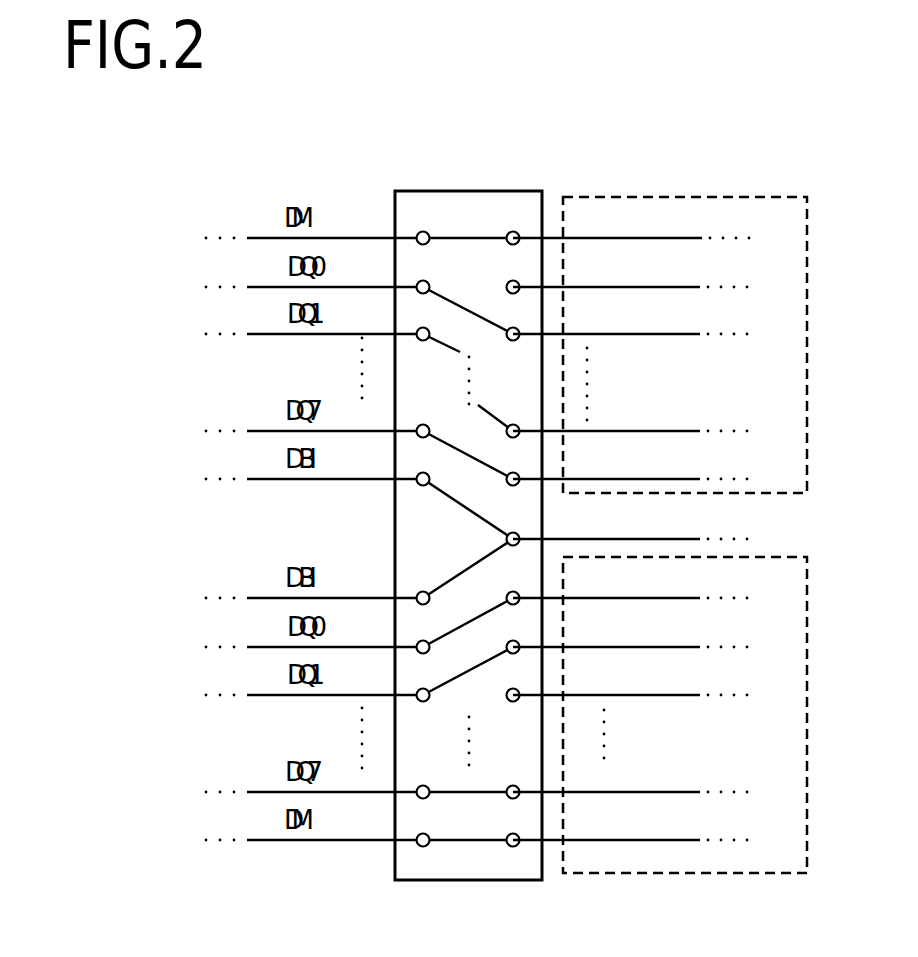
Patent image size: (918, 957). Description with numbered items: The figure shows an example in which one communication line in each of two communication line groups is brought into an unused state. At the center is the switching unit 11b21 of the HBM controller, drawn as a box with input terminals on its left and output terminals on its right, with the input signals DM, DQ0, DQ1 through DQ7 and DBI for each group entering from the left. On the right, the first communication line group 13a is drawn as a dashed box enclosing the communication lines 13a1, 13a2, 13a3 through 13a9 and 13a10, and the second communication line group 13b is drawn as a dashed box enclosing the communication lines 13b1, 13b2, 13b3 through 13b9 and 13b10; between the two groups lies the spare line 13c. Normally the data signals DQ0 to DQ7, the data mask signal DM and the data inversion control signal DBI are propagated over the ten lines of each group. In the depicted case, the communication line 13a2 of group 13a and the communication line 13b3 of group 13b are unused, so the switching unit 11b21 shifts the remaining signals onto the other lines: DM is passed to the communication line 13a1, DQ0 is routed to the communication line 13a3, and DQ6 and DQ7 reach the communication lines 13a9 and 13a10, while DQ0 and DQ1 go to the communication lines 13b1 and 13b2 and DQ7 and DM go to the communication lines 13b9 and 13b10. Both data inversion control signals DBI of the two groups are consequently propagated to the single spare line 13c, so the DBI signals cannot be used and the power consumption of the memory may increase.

The switching unit 11b21 is at (452, 191).
The communication line group 13a is at (719, 195).
The communication line group 13b is at (668, 874).
The communication line 13a1 is at (698, 237).
The communication line 13a2 is at (695, 286).
The communication line 13a3 is at (695, 333).
The communication line 13a9 is at (697, 430).
The communication line 13a10 is at (695, 478).
The spare line 13c is at (693, 538).
The communication line 13b1 is at (688, 597).
The communication line 13b2 is at (673, 646).
The communication line 13b3 is at (695, 694).
The communication line 13b9 is at (697, 791).
The communication line 13b10 is at (697, 839).